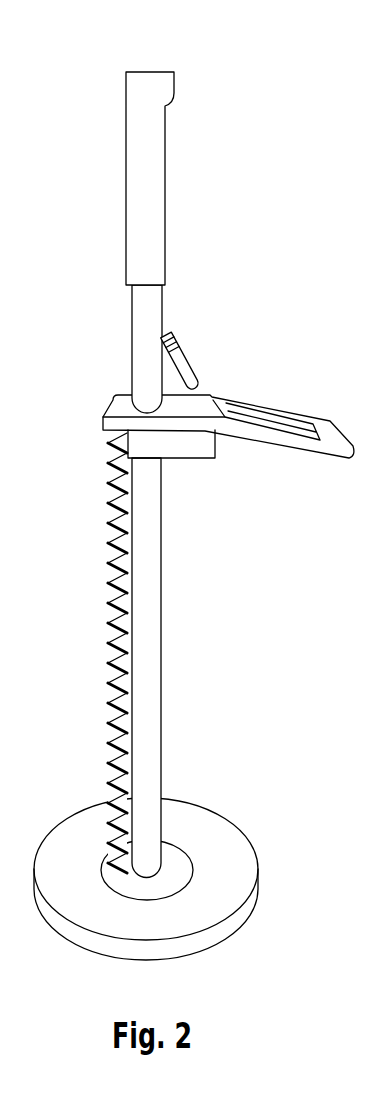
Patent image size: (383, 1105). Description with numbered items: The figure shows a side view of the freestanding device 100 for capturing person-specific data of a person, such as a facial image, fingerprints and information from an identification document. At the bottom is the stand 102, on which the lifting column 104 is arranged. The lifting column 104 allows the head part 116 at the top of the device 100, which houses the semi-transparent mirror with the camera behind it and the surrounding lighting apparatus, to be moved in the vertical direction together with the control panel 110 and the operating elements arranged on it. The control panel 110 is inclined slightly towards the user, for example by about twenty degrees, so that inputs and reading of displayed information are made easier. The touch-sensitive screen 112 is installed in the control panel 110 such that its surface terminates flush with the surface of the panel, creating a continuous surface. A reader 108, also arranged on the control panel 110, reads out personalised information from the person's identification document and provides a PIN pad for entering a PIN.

The freestanding device 100 is at (194, 484).
The stand 102 is at (203, 822).
The lifting column 104 is at (157, 615).
The reader 108 is at (192, 362).
The control panel 110 is at (325, 450).
The touch-sensitive screen 112 is at (283, 417).
The head part 116 is at (160, 185).